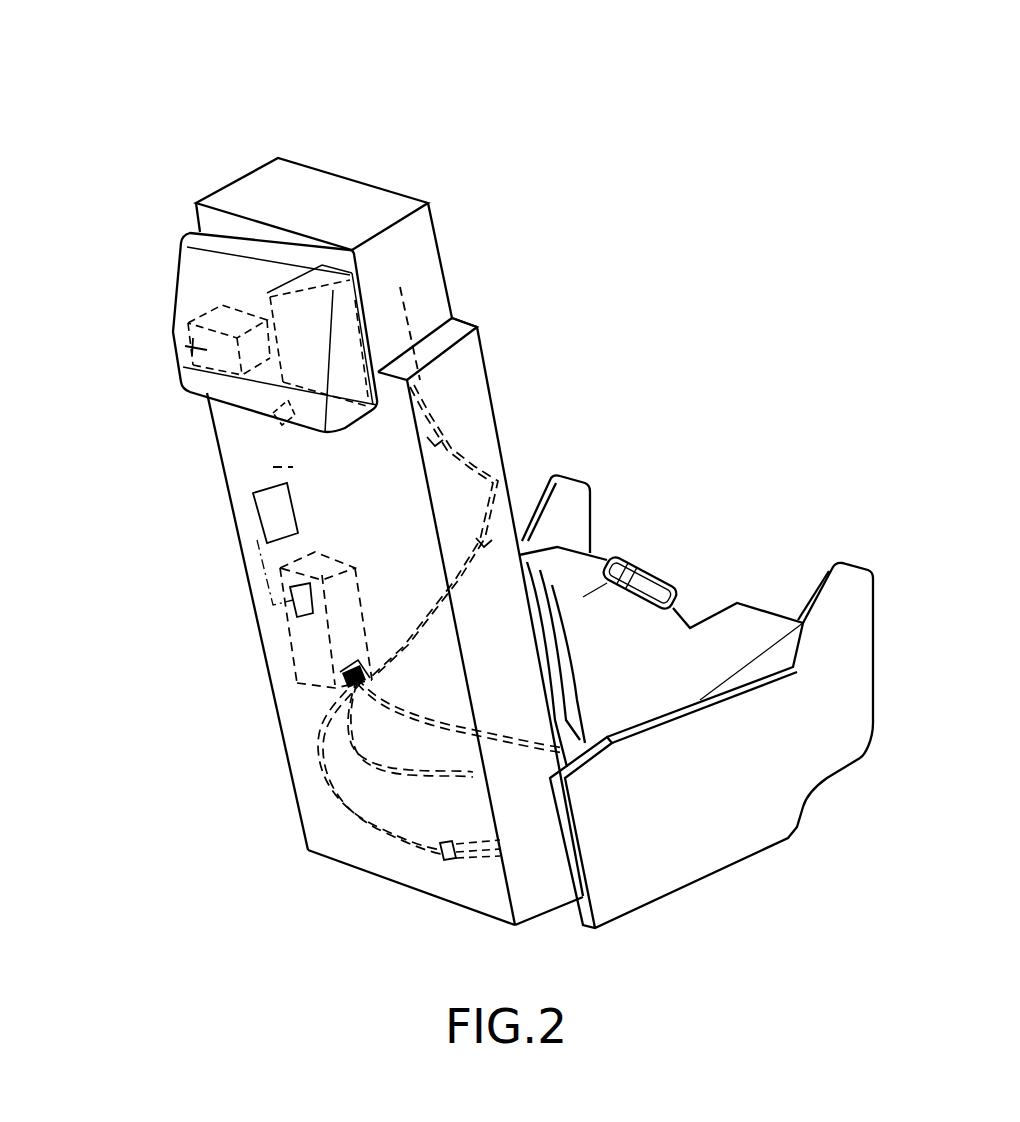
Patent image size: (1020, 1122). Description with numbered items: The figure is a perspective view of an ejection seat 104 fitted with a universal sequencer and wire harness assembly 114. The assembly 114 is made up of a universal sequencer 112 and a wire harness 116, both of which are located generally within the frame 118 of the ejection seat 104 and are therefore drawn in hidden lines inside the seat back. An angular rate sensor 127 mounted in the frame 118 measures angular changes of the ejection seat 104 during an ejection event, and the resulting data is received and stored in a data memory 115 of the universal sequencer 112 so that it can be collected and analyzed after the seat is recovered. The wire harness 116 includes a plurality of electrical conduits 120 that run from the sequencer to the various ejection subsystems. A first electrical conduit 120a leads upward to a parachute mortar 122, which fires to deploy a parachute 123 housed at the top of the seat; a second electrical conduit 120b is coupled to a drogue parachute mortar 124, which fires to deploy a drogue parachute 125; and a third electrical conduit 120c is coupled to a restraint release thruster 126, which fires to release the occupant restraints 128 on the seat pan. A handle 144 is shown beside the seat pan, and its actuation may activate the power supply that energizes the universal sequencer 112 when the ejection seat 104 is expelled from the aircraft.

The ejection seat 104 is at (118, 103).
The universal sequencer 112 is at (313, 640).
The universal sequencer and wire harness assembly 114 is at (170, 657).
The data memory 115 is at (297, 613).
The wire harness 116 is at (317, 703).
The frame 118 is at (383, 492).
The electrical conduits 120 is at (443, 720).
The first electrical conduit 120a is at (507, 455).
The second electrical conduit 120b is at (273, 467).
The third electrical conduit 120c is at (330, 862).
The parachute mortar 122 is at (458, 383).
The parachute 123 is at (405, 280).
The drogue parachute mortar 124 is at (273, 413).
The drogue parachute 125 is at (185, 346).
The restraint release thruster 126 is at (440, 873).
The angular rate sensor 127 is at (265, 518).
The occupant restraints 128 is at (553, 634).
The handle 144 is at (640, 557).